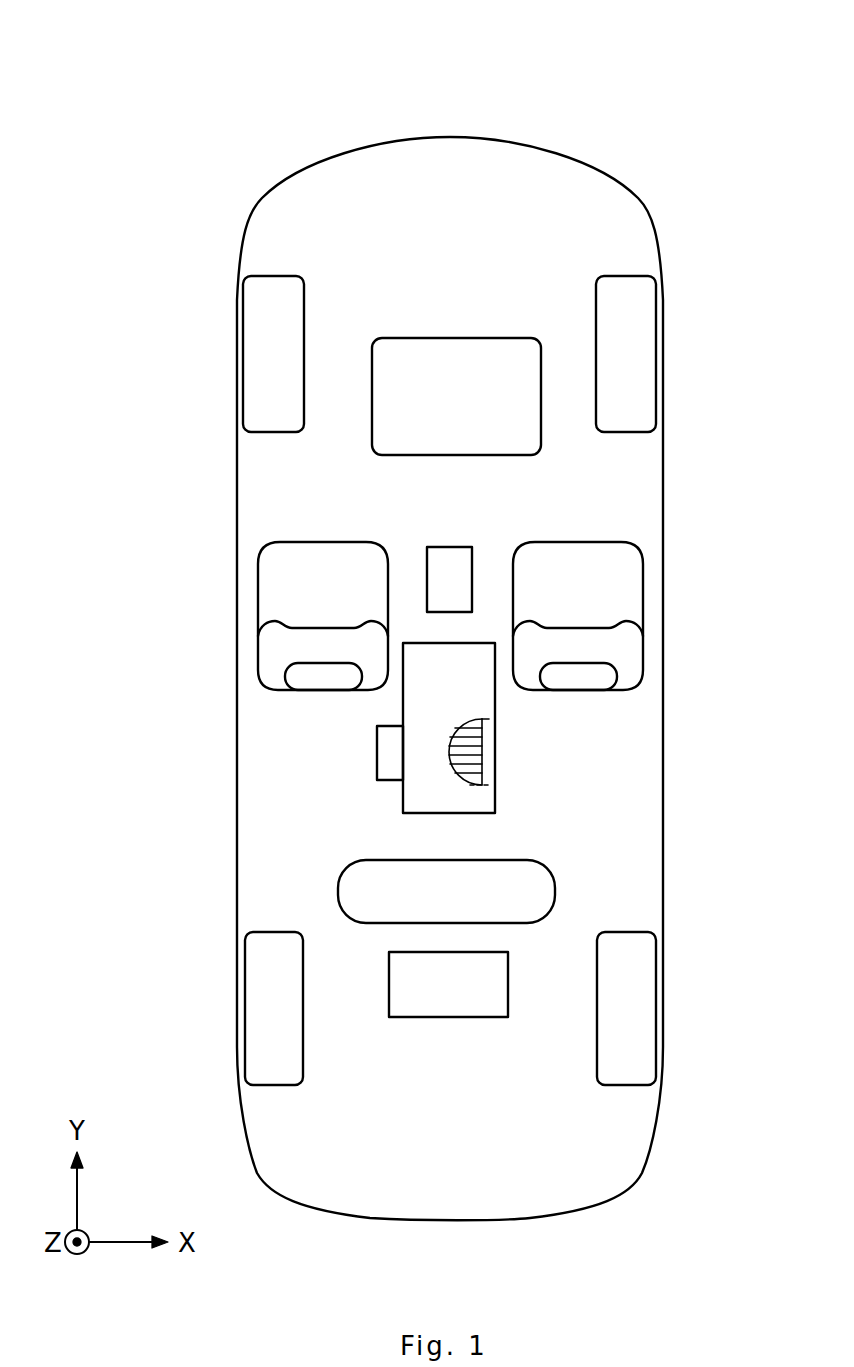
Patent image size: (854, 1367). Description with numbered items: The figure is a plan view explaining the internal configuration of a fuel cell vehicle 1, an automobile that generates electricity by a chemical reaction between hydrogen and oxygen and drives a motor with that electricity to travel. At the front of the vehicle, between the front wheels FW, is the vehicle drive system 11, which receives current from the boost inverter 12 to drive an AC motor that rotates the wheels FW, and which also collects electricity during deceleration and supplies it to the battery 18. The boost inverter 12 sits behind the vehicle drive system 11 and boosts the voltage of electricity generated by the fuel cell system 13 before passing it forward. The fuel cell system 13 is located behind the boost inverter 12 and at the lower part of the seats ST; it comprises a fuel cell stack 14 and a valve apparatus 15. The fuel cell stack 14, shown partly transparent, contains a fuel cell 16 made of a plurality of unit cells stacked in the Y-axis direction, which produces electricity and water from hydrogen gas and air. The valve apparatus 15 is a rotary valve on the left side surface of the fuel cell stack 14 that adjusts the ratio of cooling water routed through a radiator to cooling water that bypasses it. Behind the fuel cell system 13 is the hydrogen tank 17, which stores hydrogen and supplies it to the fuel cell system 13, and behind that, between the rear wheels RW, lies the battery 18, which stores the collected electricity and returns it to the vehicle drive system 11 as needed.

The fuel cell vehicle 1 is at (249, 92).
The vehicle drive system 11 is at (390, 422).
The boost inverter 12 is at (438, 570).
The fuel cell system 13 is at (276, 728).
The fuel cell stack 14 is at (415, 708).
The valve apparatus 15 is at (387, 765).
The fuel cell 16 is at (473, 743).
The hydrogen tank 17 is at (363, 903).
The battery 18 is at (405, 982).
The wheels FW is at (608, 298).
The rear wheel RW is at (612, 1075).
The seats ST is at (273, 602).